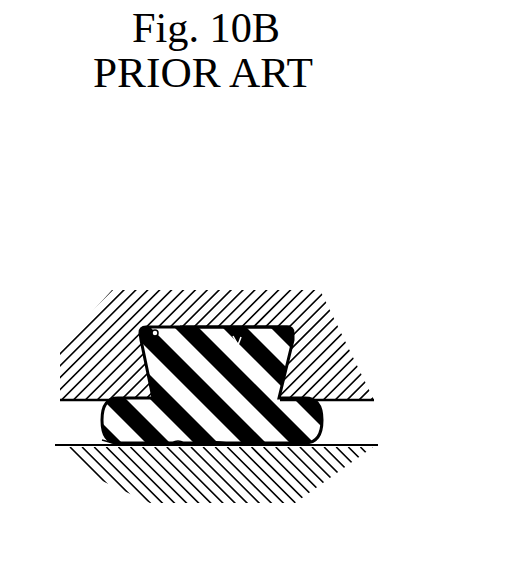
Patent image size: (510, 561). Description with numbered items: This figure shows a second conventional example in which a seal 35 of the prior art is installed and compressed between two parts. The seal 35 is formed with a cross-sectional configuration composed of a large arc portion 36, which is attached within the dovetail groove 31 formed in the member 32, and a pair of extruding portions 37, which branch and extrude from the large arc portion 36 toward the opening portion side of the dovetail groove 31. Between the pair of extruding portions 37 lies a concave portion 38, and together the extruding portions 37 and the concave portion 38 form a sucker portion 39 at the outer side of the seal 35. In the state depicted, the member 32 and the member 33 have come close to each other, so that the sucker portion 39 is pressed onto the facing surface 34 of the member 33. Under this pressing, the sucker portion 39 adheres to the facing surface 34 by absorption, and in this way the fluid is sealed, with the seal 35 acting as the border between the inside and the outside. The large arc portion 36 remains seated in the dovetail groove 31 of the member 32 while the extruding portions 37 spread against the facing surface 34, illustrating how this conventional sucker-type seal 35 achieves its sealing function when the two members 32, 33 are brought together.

The dovetail groove 31 is at (167, 323).
The member 32 is at (112, 362).
The member 33 is at (223, 505).
The facing surface 34 is at (364, 444).
The seal 35 is at (245, 325).
The large arc portion 36 is at (208, 323).
The extruding portions 37 is at (310, 398).
The concave portion 38 is at (220, 448).
The sucker portion 39 is at (180, 447).